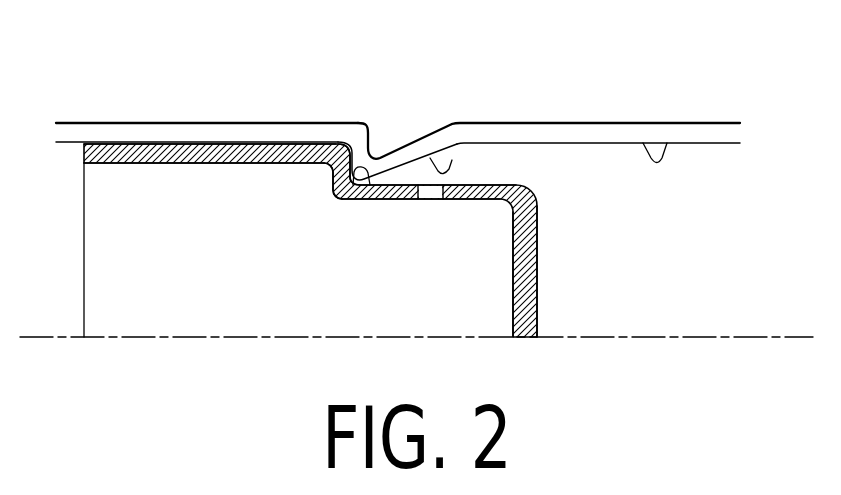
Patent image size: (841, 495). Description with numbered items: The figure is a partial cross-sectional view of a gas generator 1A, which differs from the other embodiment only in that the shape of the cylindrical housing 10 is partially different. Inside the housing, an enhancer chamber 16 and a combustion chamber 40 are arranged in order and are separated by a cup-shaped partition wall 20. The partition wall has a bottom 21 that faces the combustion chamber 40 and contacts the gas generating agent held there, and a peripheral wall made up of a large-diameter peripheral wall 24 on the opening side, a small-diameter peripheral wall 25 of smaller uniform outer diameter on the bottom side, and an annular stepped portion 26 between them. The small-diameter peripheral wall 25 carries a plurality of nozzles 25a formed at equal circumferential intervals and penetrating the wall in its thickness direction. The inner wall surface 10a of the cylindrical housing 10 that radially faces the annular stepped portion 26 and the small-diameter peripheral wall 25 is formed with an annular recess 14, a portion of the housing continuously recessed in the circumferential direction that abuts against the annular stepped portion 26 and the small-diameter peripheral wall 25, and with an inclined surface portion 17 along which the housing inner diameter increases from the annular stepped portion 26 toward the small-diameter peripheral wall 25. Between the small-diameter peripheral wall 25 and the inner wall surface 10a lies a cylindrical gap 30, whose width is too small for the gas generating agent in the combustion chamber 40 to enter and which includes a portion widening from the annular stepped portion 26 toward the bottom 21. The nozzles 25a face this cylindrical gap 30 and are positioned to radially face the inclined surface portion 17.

The gas generator 1A is at (262, 109).
The cylindrical housing 10 is at (600, 122).
The inner wall surface 10a is at (667, 143).
The annular recess 14 is at (377, 144).
The enhancer chamber 16 is at (195, 311).
The inclined surface portion 17 is at (452, 160).
The cup-shaped partition wall 20 is at (562, 280).
The bottom 21 is at (538, 221).
The large-diameter peripheral wall 24 is at (201, 143).
The small-diameter peripheral wall 25 is at (502, 185).
The nozzles 25a is at (432, 200).
The annular stepped portion 26 is at (340, 203).
The cylindrical gap 30 is at (475, 163).
The combustion chamber 40 is at (703, 301).